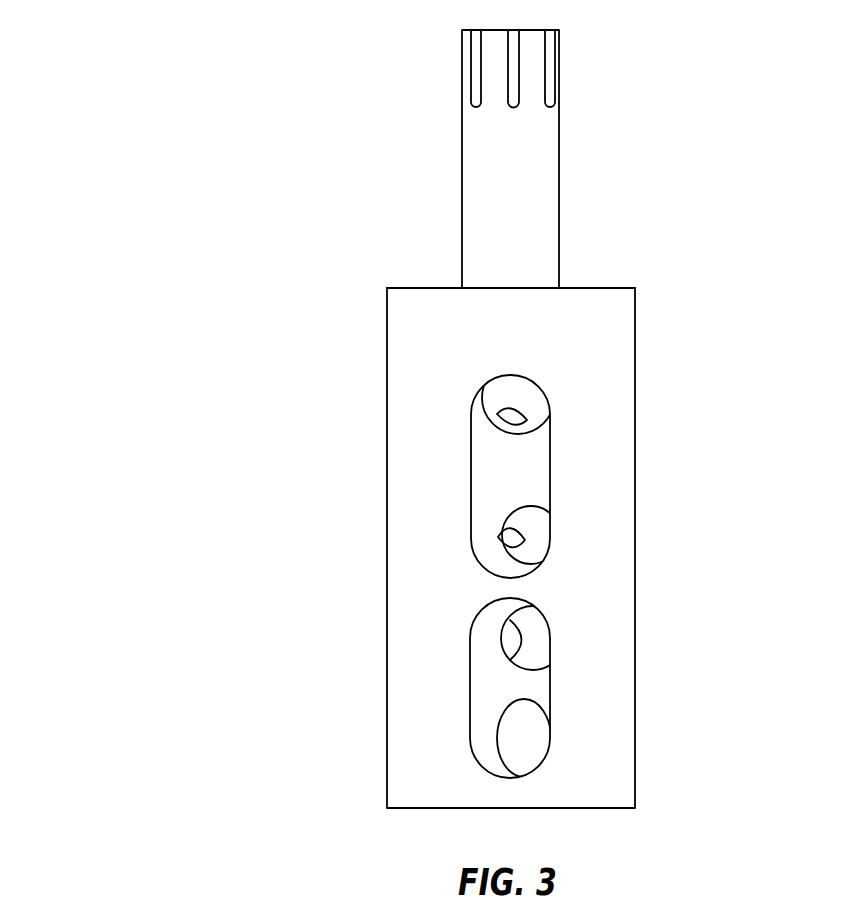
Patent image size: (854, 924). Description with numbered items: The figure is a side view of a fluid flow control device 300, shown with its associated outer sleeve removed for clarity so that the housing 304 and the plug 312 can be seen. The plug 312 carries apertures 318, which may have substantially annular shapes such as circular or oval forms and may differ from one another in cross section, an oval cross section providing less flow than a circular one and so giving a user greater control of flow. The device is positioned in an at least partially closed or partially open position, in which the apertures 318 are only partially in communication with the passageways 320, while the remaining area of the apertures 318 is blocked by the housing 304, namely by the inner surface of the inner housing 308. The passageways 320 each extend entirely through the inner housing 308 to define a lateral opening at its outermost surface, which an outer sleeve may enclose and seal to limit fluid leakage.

The fluid flow control device 300 is at (106, 109).
The housing 304 is at (422, 702).
The inner housing 308 is at (440, 321).
The plug 312 is at (537, 210).
The apertures 318 is at (527, 400).
The passageways 320 is at (552, 449).